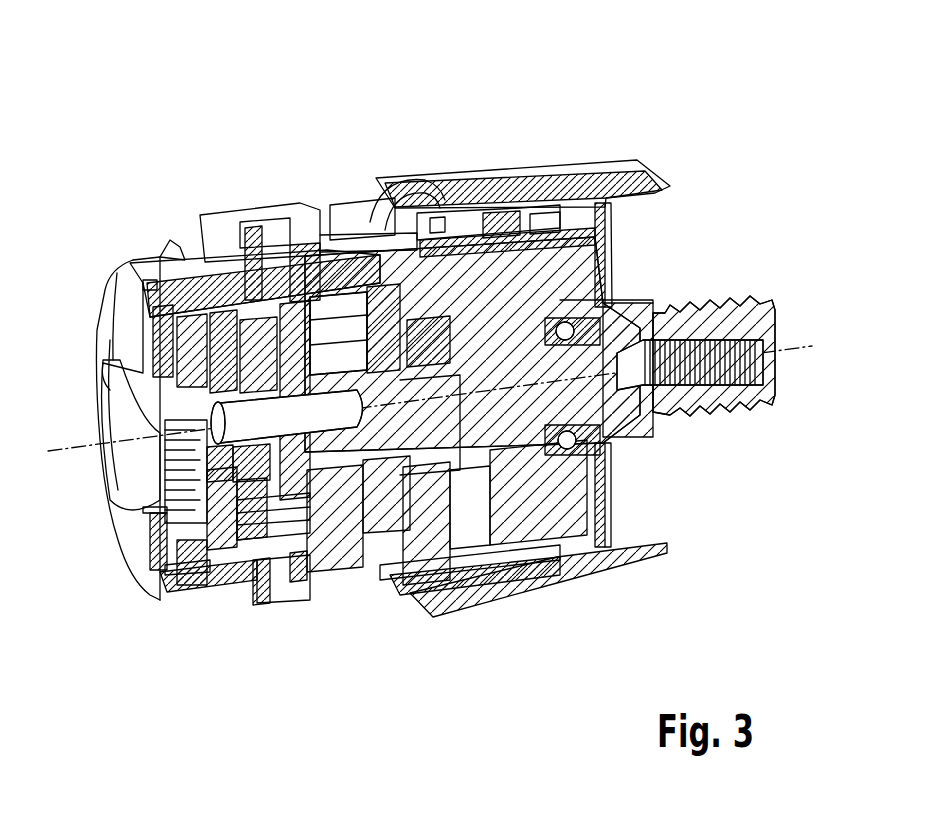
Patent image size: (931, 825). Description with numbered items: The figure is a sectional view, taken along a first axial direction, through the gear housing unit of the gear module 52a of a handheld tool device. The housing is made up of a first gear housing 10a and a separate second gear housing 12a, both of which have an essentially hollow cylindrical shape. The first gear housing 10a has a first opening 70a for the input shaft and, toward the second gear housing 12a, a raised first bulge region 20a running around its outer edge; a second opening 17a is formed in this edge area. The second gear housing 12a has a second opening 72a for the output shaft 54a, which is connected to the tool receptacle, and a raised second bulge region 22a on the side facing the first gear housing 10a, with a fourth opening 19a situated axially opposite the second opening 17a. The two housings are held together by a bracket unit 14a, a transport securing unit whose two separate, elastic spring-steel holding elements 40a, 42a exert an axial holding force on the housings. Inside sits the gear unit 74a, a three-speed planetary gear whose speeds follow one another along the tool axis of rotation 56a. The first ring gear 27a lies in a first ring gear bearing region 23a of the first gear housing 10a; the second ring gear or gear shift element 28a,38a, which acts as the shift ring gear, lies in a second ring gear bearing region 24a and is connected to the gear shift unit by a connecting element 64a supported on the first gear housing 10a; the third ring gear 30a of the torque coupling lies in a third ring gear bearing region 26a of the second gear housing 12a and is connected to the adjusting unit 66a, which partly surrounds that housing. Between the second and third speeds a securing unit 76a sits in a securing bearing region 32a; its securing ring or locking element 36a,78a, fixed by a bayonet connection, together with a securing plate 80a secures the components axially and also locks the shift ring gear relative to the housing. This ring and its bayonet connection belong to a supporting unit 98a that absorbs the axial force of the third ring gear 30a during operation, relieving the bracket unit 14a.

The first gear housing 10a is at (207, 262).
The second gear housing 12a is at (417, 214).
The bracket unit 14a is at (288, 185).
The second opening 17a is at (235, 600).
The fourth opening 19a is at (340, 590).
The first bulge region 20a is at (213, 212).
The second bulge region 22a is at (268, 228).
The first ring gear bearing region 23a is at (150, 588).
The second ring gear bearing region 24a is at (270, 580).
The third ring gear bearing region 26a is at (325, 585).
The first ring gear 27a is at (175, 583).
The second ring gear / gear shift element 28a,38a is at (272, 570).
The third ring gear 30a is at (385, 560).
The securing bearing region 32a is at (292, 230).
The securing ring / locking element 36a,78a is at (335, 262).
The holding element 40a is at (255, 225).
The holding element 42a is at (296, 582).
The gear module 52a is at (768, 186).
The output shaft 54a is at (463, 410).
The tool axis of rotation 56a is at (800, 350).
The connecting element 64a is at (160, 253).
The adjusting unit 66a is at (590, 600).
The first opening 70a is at (88, 472).
The second opening 72a is at (622, 450).
The gear unit 74a is at (85, 425).
The securing unit 76a is at (452, 118).
The securing plate 80a is at (350, 212).
The supporting unit 98a is at (406, 102).